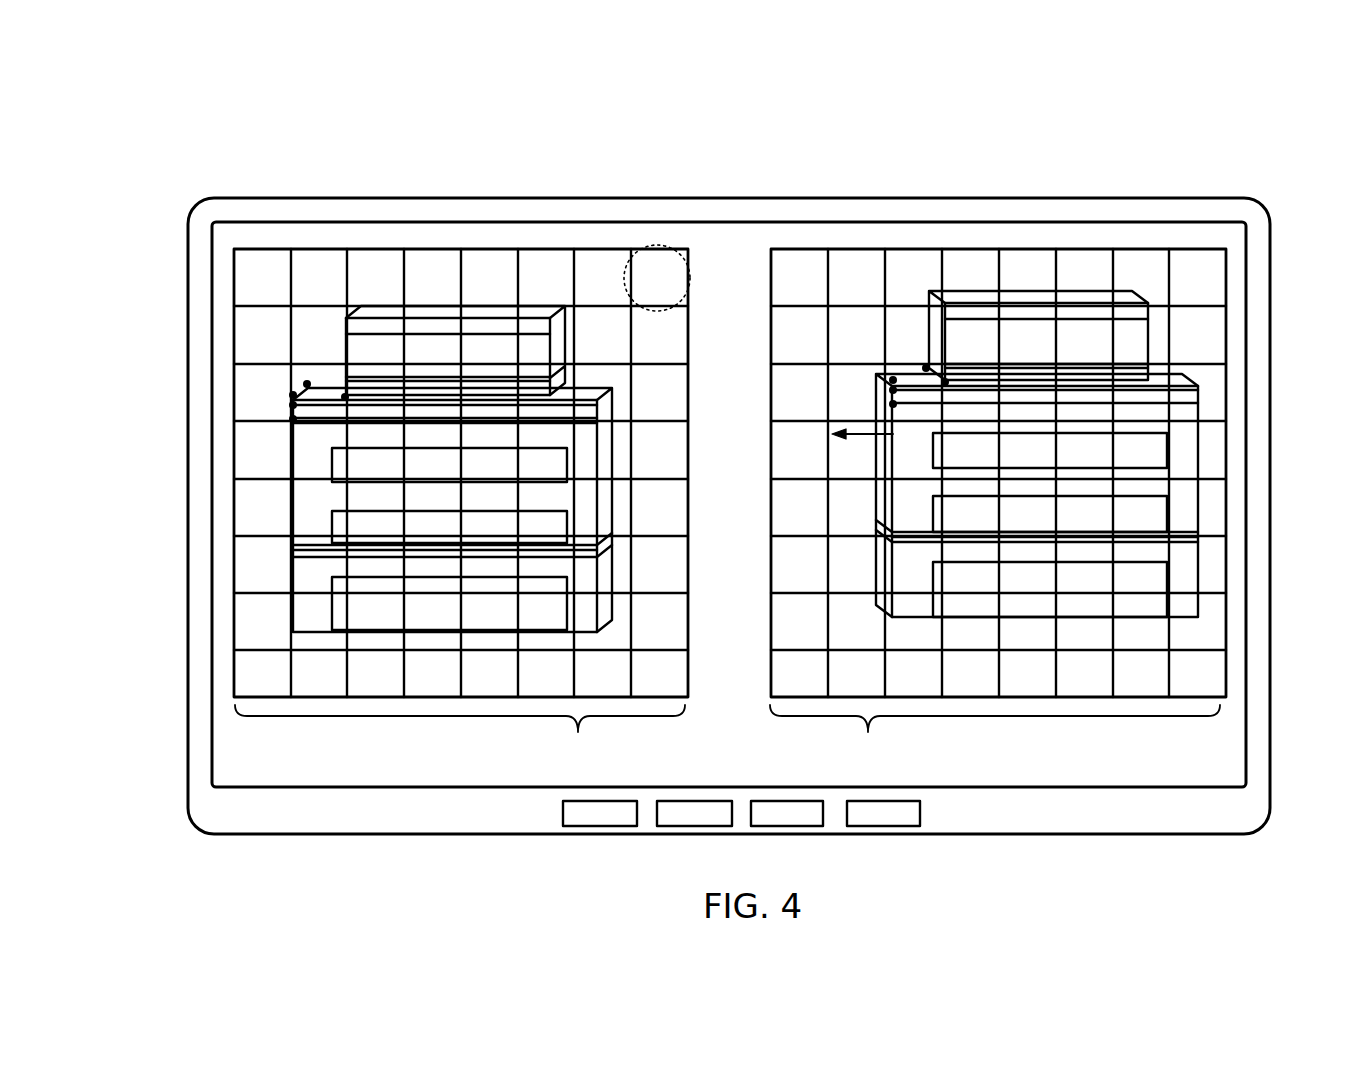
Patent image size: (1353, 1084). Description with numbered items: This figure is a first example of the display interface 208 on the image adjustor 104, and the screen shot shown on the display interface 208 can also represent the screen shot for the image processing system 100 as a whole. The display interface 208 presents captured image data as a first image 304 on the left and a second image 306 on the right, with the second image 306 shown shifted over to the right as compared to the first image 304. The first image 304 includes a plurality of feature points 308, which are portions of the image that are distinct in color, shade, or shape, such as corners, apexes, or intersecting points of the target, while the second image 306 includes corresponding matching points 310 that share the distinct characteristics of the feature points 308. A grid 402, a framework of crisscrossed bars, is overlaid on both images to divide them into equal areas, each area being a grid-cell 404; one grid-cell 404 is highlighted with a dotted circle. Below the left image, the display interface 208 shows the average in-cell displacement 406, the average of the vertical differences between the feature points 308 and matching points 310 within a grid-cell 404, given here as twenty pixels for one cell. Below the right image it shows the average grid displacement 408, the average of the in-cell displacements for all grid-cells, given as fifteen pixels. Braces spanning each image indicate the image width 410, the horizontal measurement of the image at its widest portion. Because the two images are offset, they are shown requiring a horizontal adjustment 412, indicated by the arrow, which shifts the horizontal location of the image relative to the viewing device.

The image processing system 100 is at (188, 137).
The image adjustor 104 is at (350, 213).
The display interface 208 is at (503, 235).
The first image 304 is at (245, 236).
The second image 306 is at (1203, 240).
The feature point 308 is at (293, 419).
The matching point 310 is at (893, 404).
The grid 402 is at (347, 686).
The grid-cell 404 is at (653, 247).
The average in-cell displacement 406 is at (272, 755).
The average grid displacement 408 is at (1185, 753).
The image width 410 is at (578, 732).
The horizontal adjustment 412 is at (858, 416).